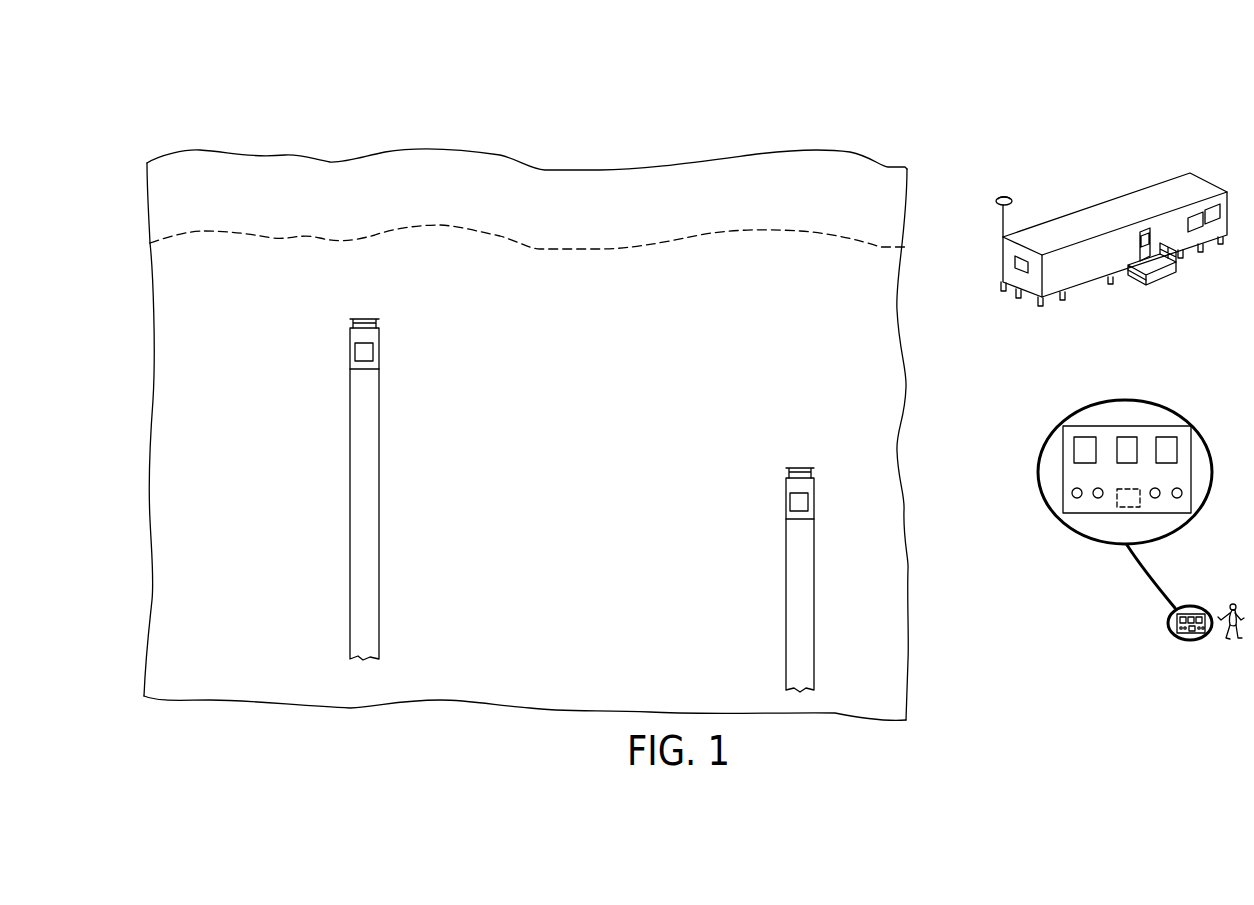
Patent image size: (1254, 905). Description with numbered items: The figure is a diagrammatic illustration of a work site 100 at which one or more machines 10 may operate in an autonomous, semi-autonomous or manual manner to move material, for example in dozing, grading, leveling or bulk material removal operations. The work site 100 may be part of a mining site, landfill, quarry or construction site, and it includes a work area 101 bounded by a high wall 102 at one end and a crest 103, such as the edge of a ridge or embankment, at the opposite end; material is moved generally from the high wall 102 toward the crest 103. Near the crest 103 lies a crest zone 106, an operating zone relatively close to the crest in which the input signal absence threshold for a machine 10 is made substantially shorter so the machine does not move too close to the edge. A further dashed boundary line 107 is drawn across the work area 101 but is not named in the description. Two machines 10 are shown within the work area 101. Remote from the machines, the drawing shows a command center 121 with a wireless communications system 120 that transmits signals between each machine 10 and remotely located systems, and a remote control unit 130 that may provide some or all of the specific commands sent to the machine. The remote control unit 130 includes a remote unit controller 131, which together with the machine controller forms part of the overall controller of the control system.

The work site 100 is at (184, 126).
The work area 101 is at (200, 291).
The high wall 102 is at (835, 713).
The crest 103 is at (285, 152).
The crest zone 106 is at (213, 183).
The subsurface boundary 107 is at (765, 230).
The machine 10 is at (360, 364).
The wireless communications system 120 is at (1012, 200).
The command center 121 is at (1120, 218).
The remote control unit 130 is at (1088, 412).
The remote unit controller 131 is at (1128, 500).